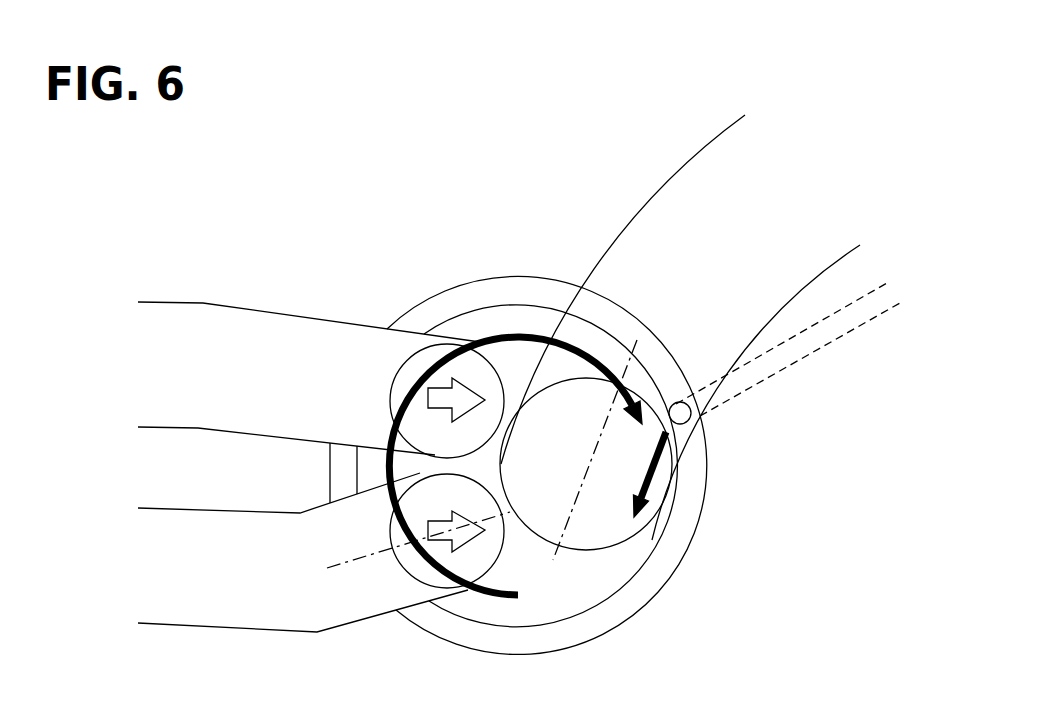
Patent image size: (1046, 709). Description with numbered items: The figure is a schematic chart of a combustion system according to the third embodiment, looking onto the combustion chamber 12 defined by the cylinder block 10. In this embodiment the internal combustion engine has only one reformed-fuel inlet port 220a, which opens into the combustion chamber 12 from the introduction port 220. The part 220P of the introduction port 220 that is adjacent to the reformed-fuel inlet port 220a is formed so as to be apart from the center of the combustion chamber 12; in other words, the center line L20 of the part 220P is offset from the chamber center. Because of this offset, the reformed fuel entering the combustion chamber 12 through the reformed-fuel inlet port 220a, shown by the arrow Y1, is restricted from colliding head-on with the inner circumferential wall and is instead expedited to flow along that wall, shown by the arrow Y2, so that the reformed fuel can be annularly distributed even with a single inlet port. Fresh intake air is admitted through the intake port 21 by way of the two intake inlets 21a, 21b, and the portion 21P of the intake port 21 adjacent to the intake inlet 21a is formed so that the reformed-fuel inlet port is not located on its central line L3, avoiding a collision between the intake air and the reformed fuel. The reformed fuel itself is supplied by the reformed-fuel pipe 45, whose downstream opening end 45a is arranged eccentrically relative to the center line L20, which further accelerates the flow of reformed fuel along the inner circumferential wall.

The cylinder block 10 is at (497, 279).
The combustion chamber 12 is at (484, 323).
The introduction port 220 is at (648, 197).
The part of the introduction port 220P is at (553, 326).
The reformed-fuel inlet port 220a is at (580, 540).
The intake port 21 is at (250, 433).
The intake inlet 21a is at (413, 563).
The intake inlet 21b is at (413, 369).
The portion of the intake port 21P is at (398, 606).
The reformed-fuel pipe 45 is at (848, 333).
The downstream opening end 45a is at (678, 424).
The arrow indicating reformed-fuel inflow Y1 is at (650, 490).
The arrow indicating reformed-fuel flow along inner wall Y2 is at (580, 345).
The center line of the part of the introduction port L20 is at (610, 429).
The central line of the portion of the intake port L3 is at (400, 552).